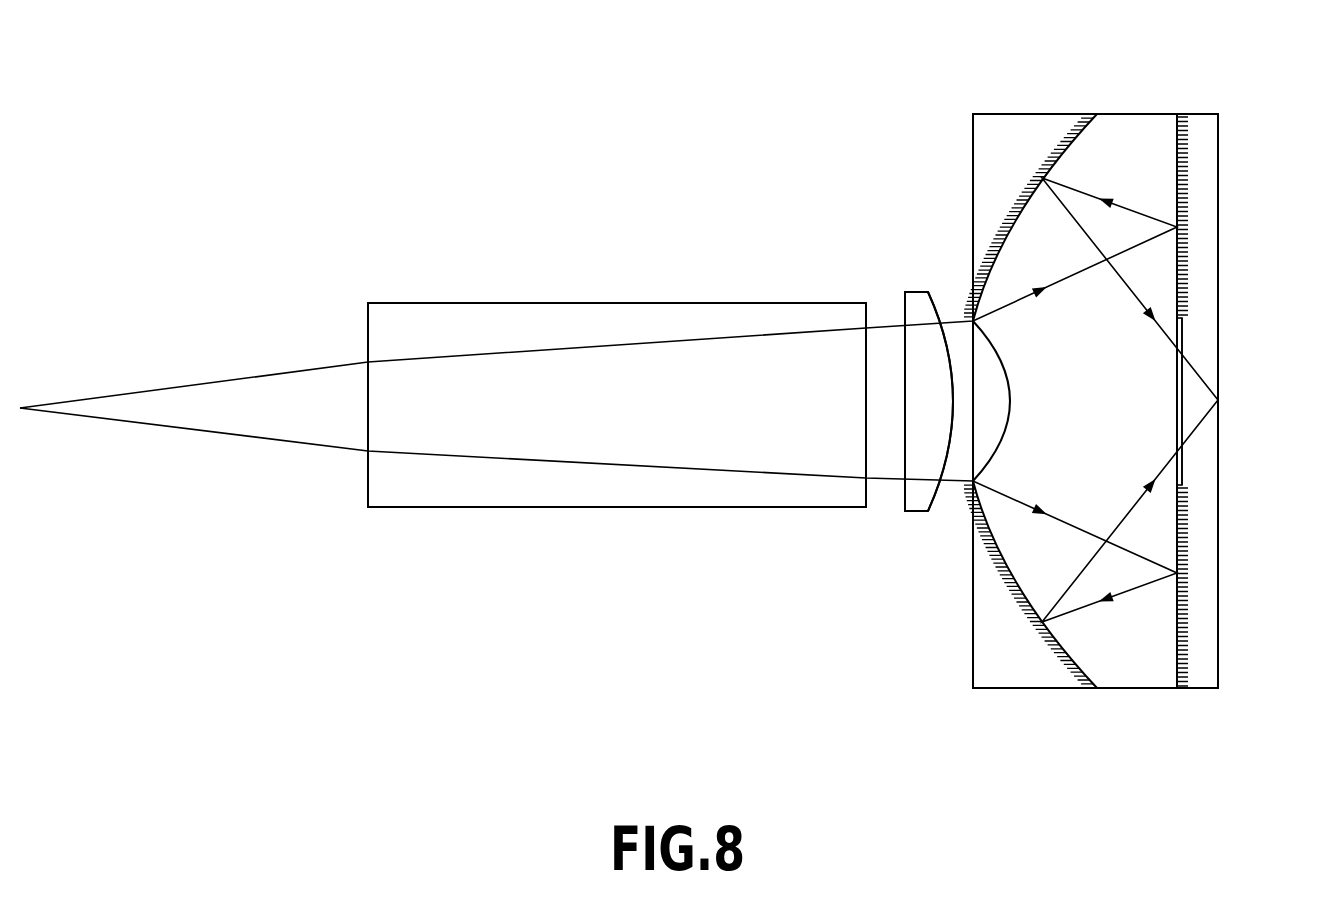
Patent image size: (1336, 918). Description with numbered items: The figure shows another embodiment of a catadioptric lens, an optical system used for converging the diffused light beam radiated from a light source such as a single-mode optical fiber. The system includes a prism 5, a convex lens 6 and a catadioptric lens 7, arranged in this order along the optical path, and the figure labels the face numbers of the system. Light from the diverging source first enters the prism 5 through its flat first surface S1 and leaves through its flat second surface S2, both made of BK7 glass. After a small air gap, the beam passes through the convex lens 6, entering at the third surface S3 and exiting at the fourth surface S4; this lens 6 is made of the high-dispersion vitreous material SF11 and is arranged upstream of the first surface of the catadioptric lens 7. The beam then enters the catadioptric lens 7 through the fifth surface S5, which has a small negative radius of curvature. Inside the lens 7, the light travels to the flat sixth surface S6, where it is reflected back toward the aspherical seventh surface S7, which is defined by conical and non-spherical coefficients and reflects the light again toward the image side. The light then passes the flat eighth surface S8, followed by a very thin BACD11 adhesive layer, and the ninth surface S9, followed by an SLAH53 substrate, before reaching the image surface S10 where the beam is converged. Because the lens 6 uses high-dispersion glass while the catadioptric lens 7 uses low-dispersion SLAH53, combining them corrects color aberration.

The prism 5 is at (653, 507).
The convex lens 6 is at (915, 512).
The catadioptric lens 7 is at (1142, 665).
The first surface S1 is at (368, 320).
The second surface S2 is at (877, 310).
The third surface S3 is at (903, 302).
The fourth surface S4 is at (943, 300).
The fifth surface S5 is at (1008, 428).
The sixth surface S6 is at (1175, 160).
The seventh surface S7 is at (1065, 150).
The eighth surface S8 is at (1177, 350).
The ninth surface S9 is at (1183, 415).
The image plane surface S10 is at (1219, 345).